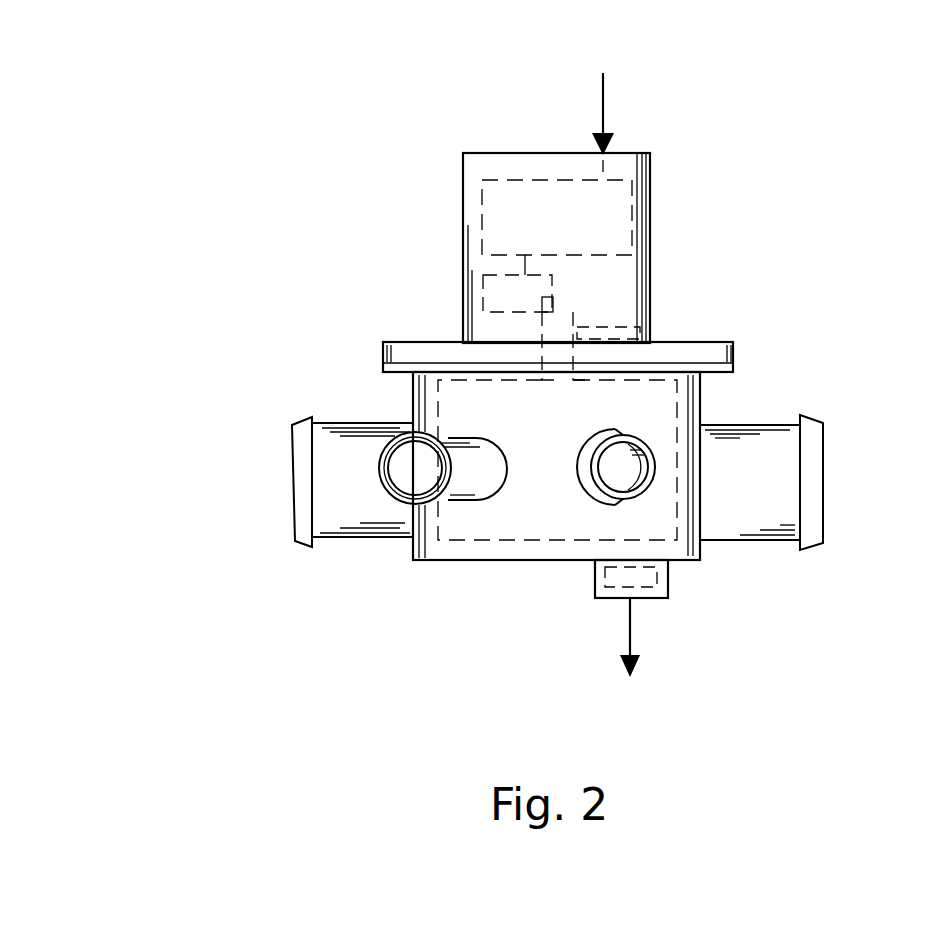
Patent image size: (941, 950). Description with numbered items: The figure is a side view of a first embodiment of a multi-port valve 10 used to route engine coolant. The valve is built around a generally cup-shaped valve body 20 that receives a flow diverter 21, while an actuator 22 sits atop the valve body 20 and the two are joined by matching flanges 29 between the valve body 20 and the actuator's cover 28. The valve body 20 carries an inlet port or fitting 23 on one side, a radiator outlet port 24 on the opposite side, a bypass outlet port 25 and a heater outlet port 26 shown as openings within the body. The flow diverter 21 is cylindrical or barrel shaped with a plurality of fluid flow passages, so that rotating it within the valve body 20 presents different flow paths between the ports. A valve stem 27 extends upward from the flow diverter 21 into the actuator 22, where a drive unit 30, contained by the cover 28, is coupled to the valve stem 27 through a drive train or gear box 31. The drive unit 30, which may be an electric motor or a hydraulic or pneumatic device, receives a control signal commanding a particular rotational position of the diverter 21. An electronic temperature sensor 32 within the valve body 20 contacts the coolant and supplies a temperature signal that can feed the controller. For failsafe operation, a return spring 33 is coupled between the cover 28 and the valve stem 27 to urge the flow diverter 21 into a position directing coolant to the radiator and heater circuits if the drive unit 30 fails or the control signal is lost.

The multi-port valve 10 is at (850, 289).
The valve body 20 is at (438, 582).
The flow diverter 21 is at (690, 408).
The actuator 22 is at (445, 259).
The inlet port 23 is at (825, 492).
The radiator outlet port 24 is at (292, 494).
The bypass outlet port 25 is at (380, 463).
The heater outlet port 26 is at (608, 504).
The valve stem 27 is at (573, 312).
The cover 28 is at (652, 202).
The matching flanges 29 is at (365, 354).
The drive unit 30 is at (515, 180).
The gear box 31 is at (483, 300).
The electronic temperature sensor 32 is at (660, 583).
The return spring 33 is at (632, 328).